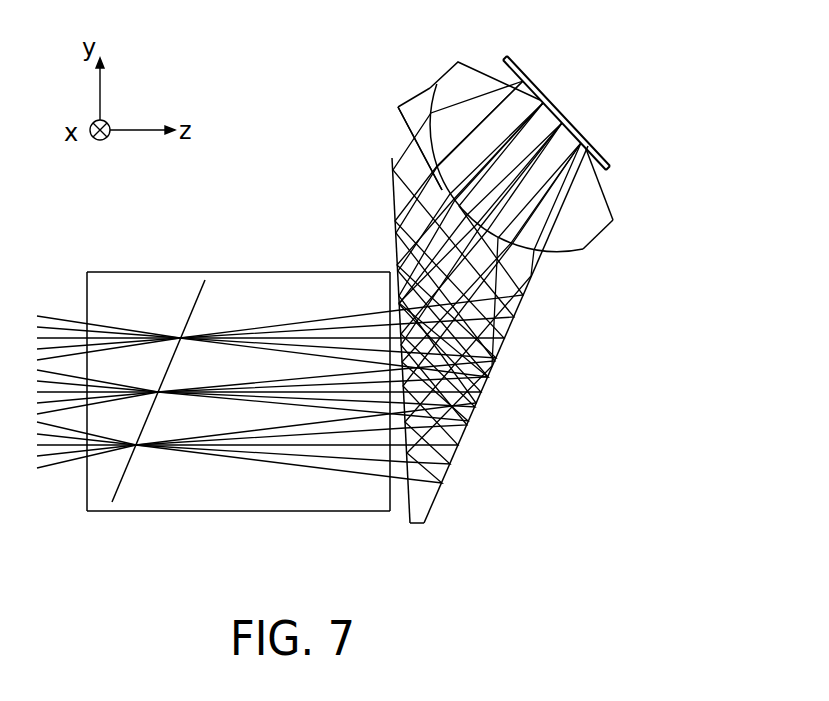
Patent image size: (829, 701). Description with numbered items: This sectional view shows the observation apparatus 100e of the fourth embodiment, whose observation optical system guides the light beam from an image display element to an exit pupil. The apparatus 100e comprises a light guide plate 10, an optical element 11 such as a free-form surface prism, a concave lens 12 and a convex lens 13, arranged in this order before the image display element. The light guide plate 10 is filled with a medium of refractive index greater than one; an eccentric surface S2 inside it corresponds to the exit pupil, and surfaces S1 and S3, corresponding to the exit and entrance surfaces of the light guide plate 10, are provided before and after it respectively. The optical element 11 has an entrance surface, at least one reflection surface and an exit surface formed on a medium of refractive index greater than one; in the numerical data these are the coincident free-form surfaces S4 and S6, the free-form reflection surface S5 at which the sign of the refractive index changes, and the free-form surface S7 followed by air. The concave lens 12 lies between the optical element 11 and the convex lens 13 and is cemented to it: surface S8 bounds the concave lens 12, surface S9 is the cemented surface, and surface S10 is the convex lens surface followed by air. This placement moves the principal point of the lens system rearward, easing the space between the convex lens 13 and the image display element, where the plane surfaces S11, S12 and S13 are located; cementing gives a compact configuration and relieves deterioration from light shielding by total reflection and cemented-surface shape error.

The observation apparatus 100e is at (700, 47).
The light guide plate 10 is at (208, 391).
The optical element 11 is at (435, 329).
The concave lens 12 is at (495, 184).
The convex lens 13 is at (535, 149).
The exit surface of the light guide plate S1 is at (88, 313).
The surface corresponding to the exit pupil S2 is at (203, 277).
The entrance surface of the light guide plate S3 is at (391, 271).
The free-form surface of the optical element S4 is at (391, 160).
The reflection surface of the optical element S5 is at (470, 428).
The free-form surface of the optical element S6 is at (420, 148).
The exit-side free-form surface of the optical element S7 is at (392, 157).
The surface of the concave lens S8 is at (398, 106).
The cemented surface S9 is at (437, 83).
The surface of the convex lens S10 is at (495, 80).
The plane surface S11 is at (610, 199).
The plane surface S12 is at (608, 172).
The final plane surface S13 is at (592, 146).